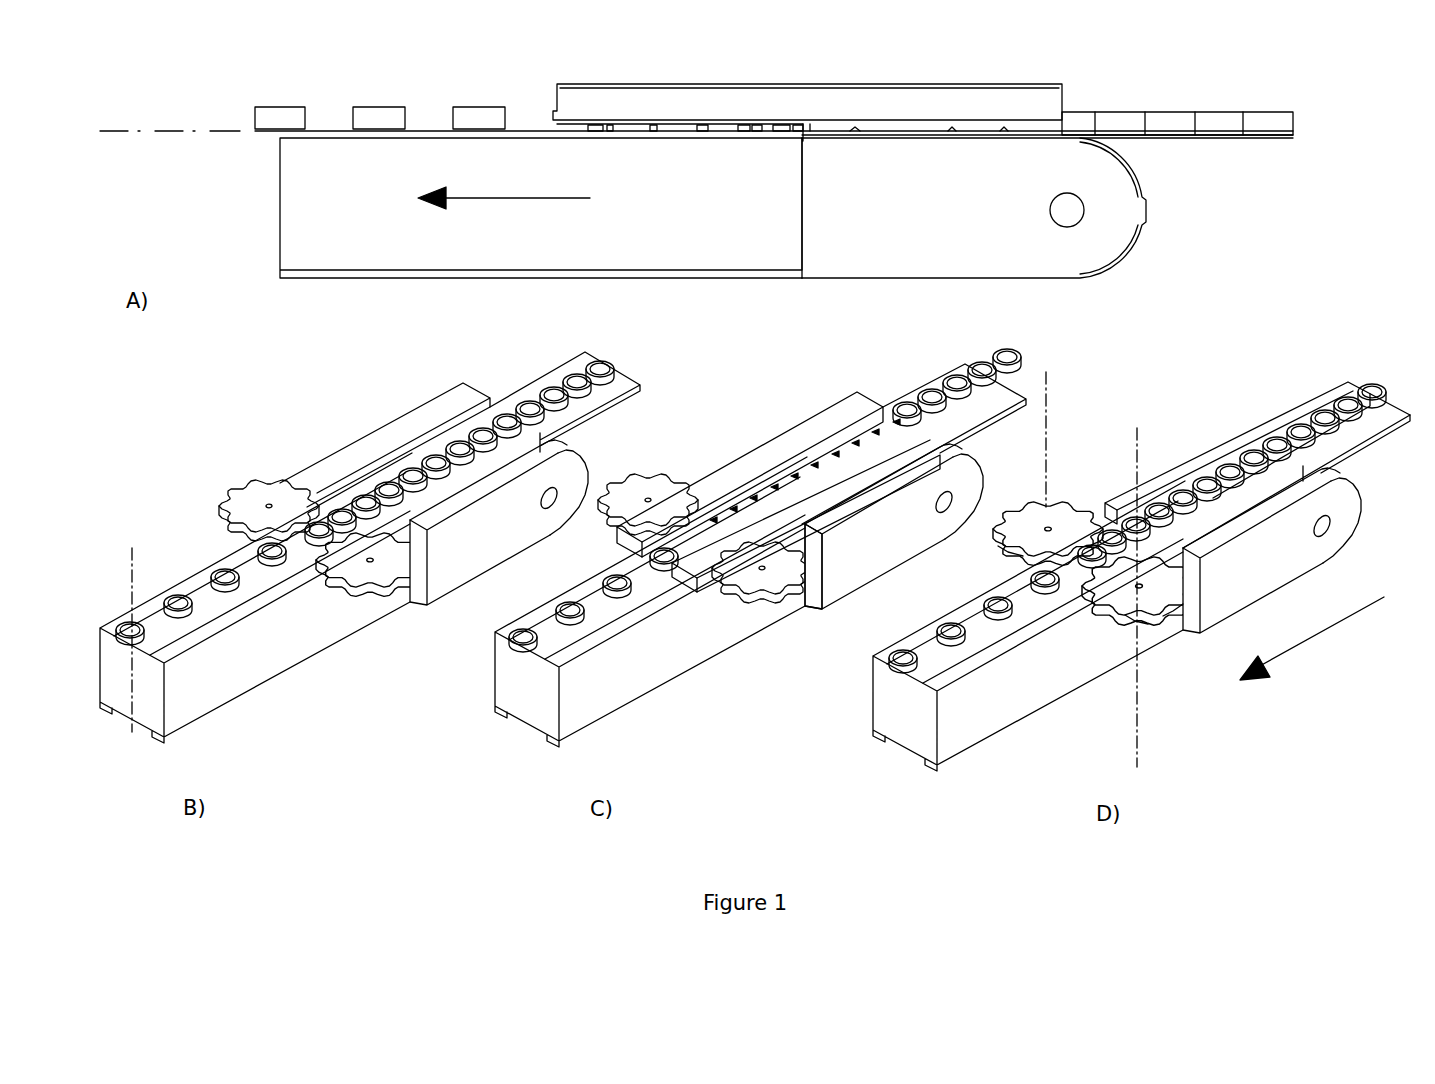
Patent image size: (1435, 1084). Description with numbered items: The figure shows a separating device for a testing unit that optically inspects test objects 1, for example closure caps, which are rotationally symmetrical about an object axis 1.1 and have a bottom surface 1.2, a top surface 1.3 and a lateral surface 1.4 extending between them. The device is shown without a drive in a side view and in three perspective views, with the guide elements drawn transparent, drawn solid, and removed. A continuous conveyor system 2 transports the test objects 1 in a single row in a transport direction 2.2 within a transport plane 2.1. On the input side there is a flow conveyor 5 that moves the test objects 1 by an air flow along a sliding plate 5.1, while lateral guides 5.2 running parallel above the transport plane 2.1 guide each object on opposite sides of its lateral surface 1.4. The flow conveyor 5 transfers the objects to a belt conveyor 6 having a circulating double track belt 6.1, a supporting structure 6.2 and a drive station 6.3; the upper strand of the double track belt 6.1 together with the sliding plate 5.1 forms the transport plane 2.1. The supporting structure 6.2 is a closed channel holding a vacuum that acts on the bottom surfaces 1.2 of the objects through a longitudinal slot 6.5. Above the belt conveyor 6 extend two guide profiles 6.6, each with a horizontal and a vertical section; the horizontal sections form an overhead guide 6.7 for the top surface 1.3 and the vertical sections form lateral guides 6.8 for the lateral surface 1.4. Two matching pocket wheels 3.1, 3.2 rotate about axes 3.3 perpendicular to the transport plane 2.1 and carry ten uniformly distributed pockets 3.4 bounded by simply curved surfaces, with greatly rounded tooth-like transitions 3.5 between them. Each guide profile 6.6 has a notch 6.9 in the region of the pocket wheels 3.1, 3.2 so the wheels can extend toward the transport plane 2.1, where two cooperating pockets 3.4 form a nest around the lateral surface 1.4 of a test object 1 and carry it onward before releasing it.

In FIG. 1b, the test object 1 is at (181, 665).
In FIG. 1b, the object axis 1.1 is at (134, 731).
In FIG. 1b, the bottom surface 1.2 is at (222, 570).
In FIG. 1b, the top surface 1.3 is at (214, 564).
In FIG. 1b, the lateral surface 1.4 is at (192, 616).
In FIG. 1d, the continuous conveyor system 2 is at (1209, 435).
In FIG. 1a, the transport plane 2.1 is at (183, 132).
In FIG. 1a, the transport direction 2.2 is at (478, 199).
In FIG. 1d, the transport direction 2.2 is at (1313, 650).
In FIG. 1d, the pocket wheel 3.1 is at (1054, 518).
In FIG. 1c, the pocket wheel 3.2 is at (789, 590).
In FIG. 1d, the pocket wheel 3.2 is at (1175, 581).
In FIG. 1d, the axis 3.3 is at (1049, 394).
In FIG. 1a, the pocket 3.4 is at (686, 138).
In FIG. 1d, the pocket 3.4 is at (992, 549).
In FIG. 1d, the tooth-like transition 3.5 is at (1168, 635).
In FIG. 1d, the flow conveyor 5 is at (1310, 386).
In FIG. 1a, the sliding plate 5.1 is at (1206, 136).
In FIG. 1d, the sliding plate 5.1 is at (1346, 447).
In FIG. 1b, the lateral guide 5.2 is at (577, 398).
In FIG. 1d, the belt conveyor 6 is at (1046, 660).
In FIG. 1c, the double track belt 6.1 is at (552, 645).
In FIG. 1c, the supporting structure 6.2 is at (722, 636).
In FIG. 1c, the drive station 6.3 is at (931, 508).
In FIG. 1d, the longitudinal slot 6.5 is at (942, 665).
In FIG. 1a, the guide profile 6.6 is at (949, 117).
In FIG. 1c, the guide profile 6.6 is at (859, 459).
In FIG. 1c, the overhead guide 6.7 is at (686, 534).
In FIG. 1c, the lateral guide 6.8 is at (621, 552).
In FIG. 1a, the notch 6.9 is at (806, 137).
In FIG. 1c, the notch 6.9 is at (810, 541).